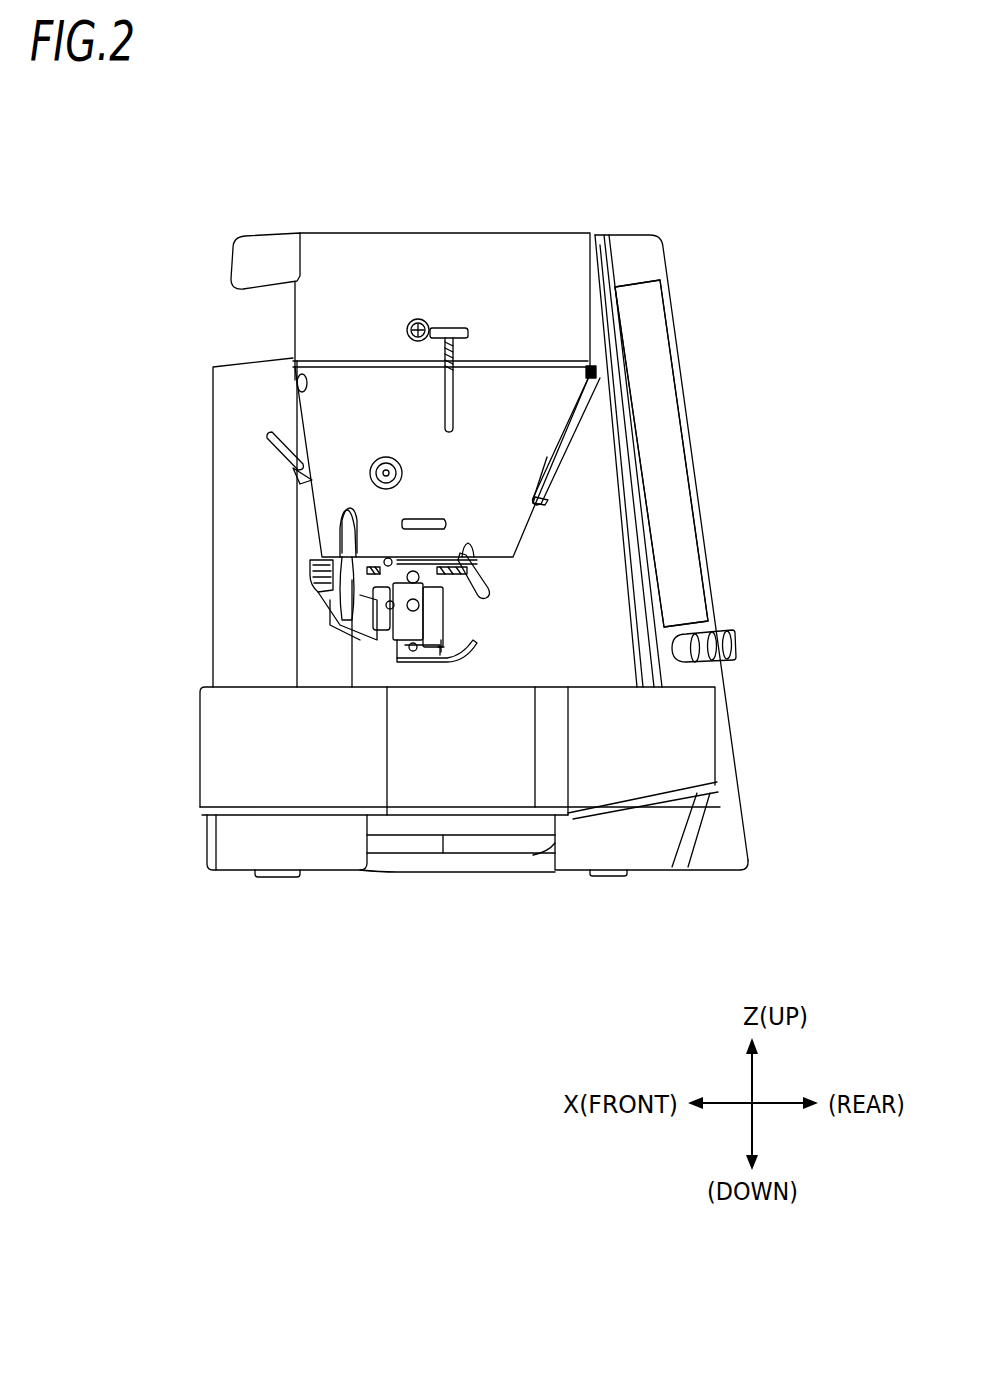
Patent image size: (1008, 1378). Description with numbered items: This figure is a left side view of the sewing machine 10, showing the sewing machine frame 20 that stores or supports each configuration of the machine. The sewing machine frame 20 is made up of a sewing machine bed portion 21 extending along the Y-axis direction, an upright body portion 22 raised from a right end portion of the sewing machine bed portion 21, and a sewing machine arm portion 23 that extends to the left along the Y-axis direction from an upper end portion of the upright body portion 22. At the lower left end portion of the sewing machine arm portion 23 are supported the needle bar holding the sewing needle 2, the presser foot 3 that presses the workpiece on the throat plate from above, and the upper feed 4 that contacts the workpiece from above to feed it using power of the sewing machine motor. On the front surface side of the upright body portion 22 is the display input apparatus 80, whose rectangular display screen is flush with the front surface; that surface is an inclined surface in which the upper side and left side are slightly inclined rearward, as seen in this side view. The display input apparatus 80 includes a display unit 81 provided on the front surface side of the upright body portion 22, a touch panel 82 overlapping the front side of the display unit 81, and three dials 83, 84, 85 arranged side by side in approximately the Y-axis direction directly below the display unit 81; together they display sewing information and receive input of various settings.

The sewing machine 10 is at (761, 148).
The sewing machine frame 20 is at (68, 513).
The sewing machine bed portion 21 is at (217, 738).
The upright body portion 22 is at (223, 640).
The sewing machine arm portion 23 is at (322, 397).
The sewing needle 2 is at (447, 627).
The presser foot 3 is at (473, 648).
The upper feed 4 is at (395, 648).
The display input apparatus 80 is at (832, 378).
The display unit 81 is at (672, 450).
The touch panel 82 is at (672, 450).
The dial 83 is at (680, 647).
The dial 84 is at (708, 642).
The dial 85 is at (728, 640).